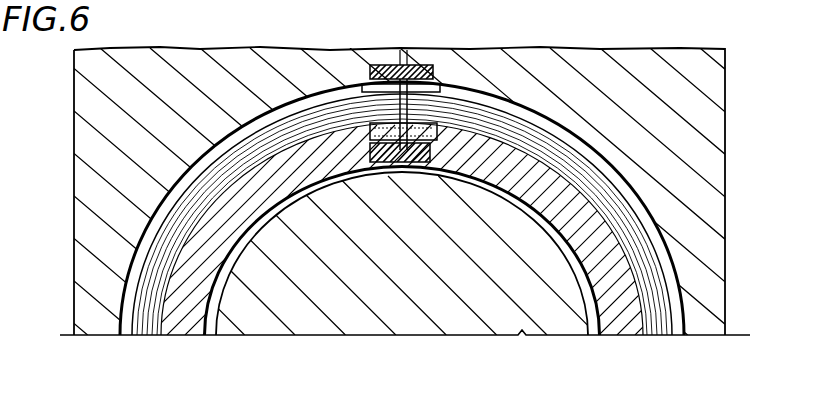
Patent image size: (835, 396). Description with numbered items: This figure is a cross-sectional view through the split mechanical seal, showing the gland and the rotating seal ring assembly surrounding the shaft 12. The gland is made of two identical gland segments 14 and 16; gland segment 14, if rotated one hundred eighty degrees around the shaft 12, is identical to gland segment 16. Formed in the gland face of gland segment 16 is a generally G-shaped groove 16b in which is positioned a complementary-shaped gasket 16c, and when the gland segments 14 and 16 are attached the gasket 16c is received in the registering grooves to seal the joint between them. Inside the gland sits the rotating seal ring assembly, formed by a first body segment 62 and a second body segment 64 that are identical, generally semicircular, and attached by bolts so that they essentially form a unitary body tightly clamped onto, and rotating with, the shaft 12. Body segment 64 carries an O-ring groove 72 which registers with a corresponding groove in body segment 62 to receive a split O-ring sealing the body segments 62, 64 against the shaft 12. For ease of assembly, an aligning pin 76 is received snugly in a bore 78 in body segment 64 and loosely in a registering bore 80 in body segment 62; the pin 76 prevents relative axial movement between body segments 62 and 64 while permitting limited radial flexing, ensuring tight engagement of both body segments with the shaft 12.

The shaft 12 is at (504, 318).
The gland segment 14 is at (707, 137).
The gland segment 16 is at (90, 133).
The G-shaped groove 16b is at (383, 66).
The gasket 16c is at (412, 82).
The first body segment 62 is at (273, 173).
The second body segment 64 is at (513, 157).
The O-ring groove 72 is at (439, 32).
The aligning pin 76 is at (412, 163).
The bore 78 is at (445, 115).
The registering bore 80 is at (368, 143).